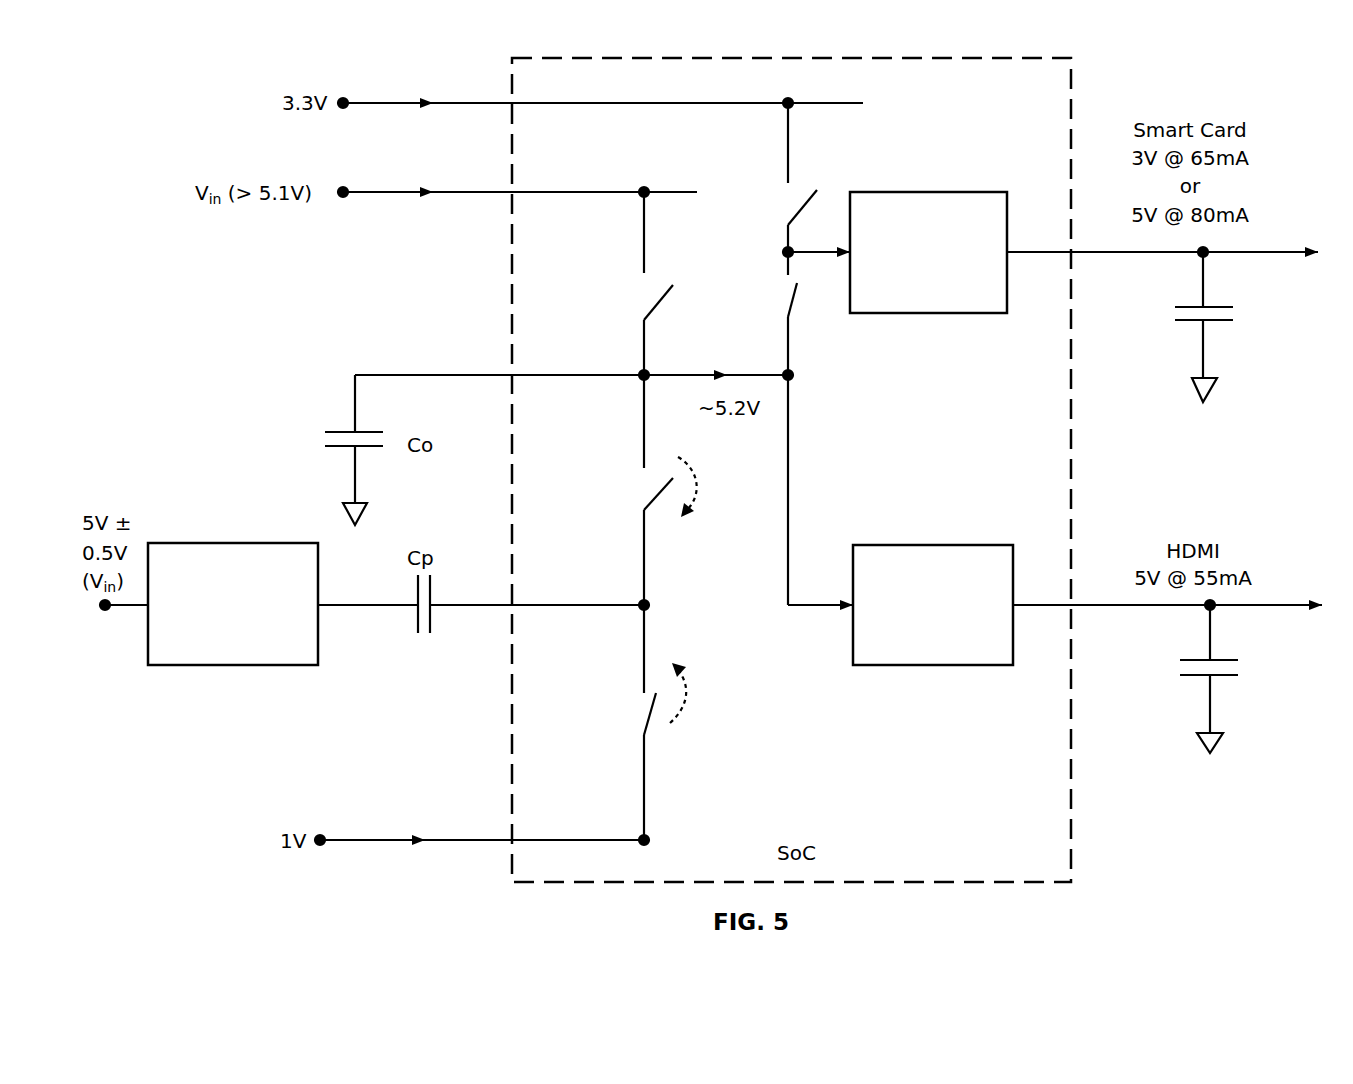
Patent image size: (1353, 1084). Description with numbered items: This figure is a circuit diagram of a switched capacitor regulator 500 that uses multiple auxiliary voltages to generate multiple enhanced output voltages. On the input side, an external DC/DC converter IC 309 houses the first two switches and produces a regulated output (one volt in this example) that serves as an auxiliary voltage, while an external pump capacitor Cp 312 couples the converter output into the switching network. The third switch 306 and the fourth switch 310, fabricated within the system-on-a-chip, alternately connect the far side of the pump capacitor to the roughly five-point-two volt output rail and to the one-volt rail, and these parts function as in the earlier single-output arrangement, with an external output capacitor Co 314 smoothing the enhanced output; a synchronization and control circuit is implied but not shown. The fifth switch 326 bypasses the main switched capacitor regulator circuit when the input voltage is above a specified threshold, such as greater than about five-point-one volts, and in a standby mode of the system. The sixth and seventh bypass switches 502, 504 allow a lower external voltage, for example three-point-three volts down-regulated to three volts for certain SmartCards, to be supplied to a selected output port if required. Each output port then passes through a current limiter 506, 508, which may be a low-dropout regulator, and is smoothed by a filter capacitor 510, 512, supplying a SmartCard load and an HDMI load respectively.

The switched capacitor regulator 500 is at (1303, 861).
The external DC/DC converter IC 309 is at (252, 668).
The external pump capacitor Cp 312 is at (418, 637).
The capacitor Co 314 is at (338, 448).
The switch SW3 306 is at (640, 480).
The switch SW4 310 is at (640, 708).
The switch SW5 326 is at (642, 292).
The bypass switch SW6 502 is at (780, 208).
The bypass switch SW7 504 is at (780, 300).
The current limiter 506 is at (953, 312).
The current limiter 508 is at (963, 665).
The filter capacitor 510 is at (1195, 323).
The filter capacitor 512 is at (1195, 677).